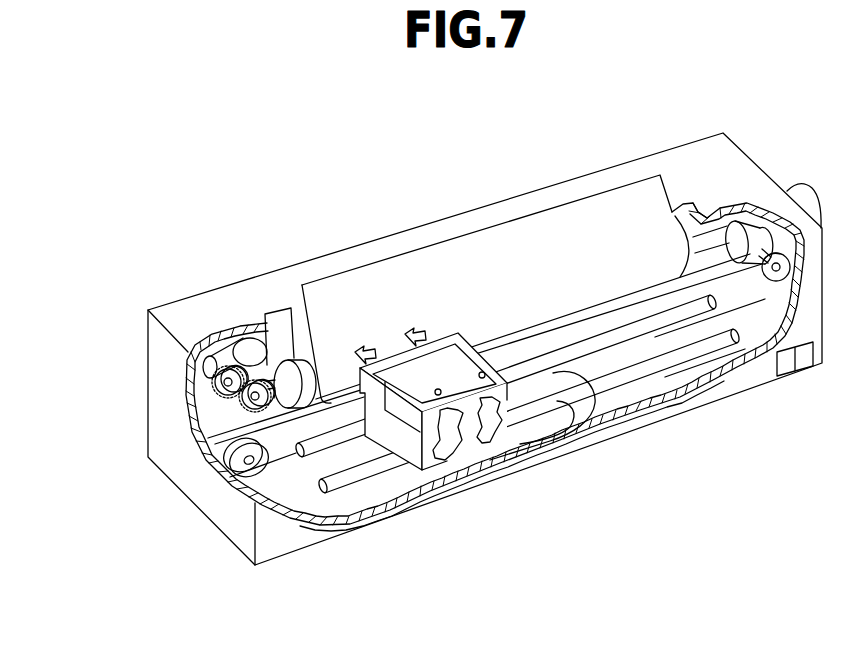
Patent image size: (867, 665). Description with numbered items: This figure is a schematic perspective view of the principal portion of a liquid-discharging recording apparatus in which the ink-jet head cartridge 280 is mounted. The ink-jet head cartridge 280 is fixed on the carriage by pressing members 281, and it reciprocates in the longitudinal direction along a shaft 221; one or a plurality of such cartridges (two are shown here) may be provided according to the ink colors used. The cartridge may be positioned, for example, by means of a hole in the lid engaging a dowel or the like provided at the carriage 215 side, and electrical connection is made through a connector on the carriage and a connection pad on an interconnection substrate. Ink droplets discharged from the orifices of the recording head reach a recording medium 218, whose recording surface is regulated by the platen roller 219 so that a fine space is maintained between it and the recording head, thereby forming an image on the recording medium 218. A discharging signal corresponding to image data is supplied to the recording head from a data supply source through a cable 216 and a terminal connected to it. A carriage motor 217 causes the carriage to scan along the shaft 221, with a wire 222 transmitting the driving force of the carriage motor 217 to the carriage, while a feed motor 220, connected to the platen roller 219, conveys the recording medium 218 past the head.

The carriage 215 is at (392, 432).
The cable 216 is at (572, 420).
The carriage motor 217 is at (743, 238).
The recording medium 218 is at (636, 207).
The platen roller 219 is at (305, 358).
The feed motor 220 is at (240, 353).
The shaft 221 is at (312, 458).
The wire 222 is at (270, 457).
The ink-jet head cartridge 280 is at (420, 385).
The pressing members 281 is at (450, 447).